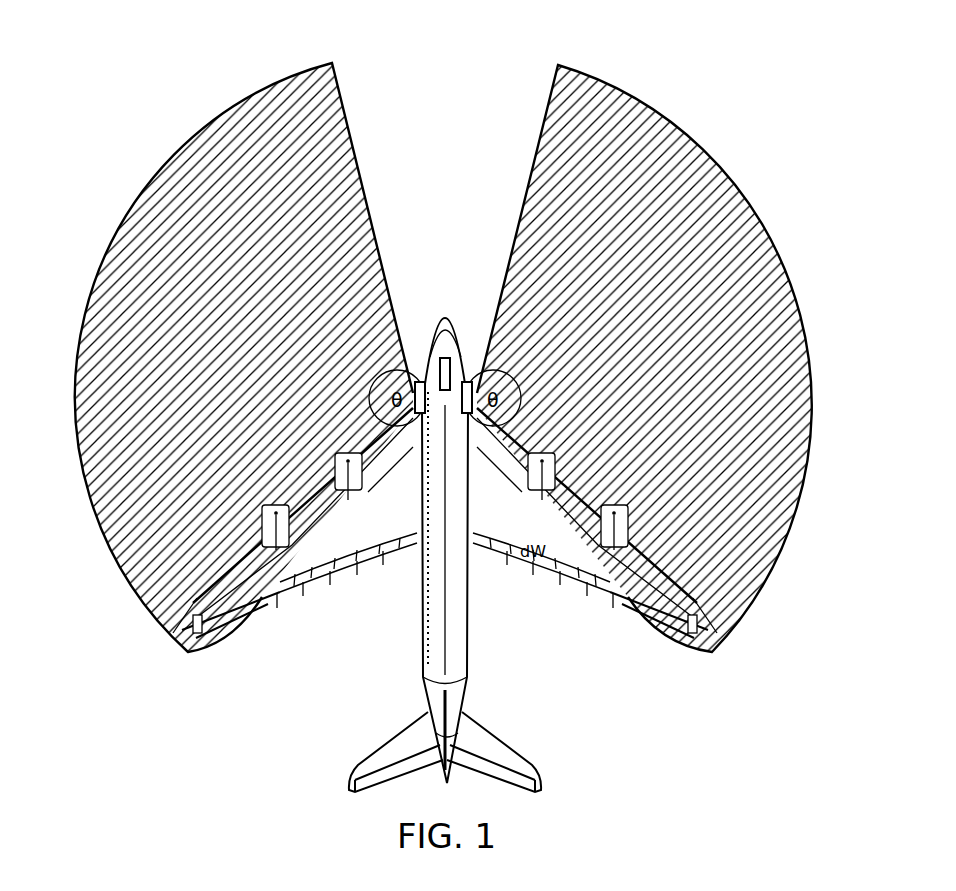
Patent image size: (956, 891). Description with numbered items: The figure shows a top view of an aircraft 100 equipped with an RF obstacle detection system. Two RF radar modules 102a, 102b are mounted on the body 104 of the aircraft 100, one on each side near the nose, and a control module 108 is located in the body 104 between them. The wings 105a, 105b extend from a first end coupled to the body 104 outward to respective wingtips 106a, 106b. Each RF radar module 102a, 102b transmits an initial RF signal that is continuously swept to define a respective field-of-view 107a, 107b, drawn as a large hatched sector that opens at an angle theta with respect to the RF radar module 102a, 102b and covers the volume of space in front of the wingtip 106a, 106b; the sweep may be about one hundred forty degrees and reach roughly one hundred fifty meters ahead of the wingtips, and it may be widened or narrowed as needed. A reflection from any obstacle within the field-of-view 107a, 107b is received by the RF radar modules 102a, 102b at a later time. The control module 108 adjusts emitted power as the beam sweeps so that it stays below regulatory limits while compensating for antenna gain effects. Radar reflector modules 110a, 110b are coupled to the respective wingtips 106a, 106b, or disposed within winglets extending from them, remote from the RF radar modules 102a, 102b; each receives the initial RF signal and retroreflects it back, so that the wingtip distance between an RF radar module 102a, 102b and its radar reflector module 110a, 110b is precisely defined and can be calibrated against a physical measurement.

The aircraft 100 is at (426, 639).
The RF radar module 102a is at (420, 382).
The RF radar module 102b is at (467, 382).
The body 104 is at (440, 597).
The wing 105a is at (385, 505).
The wing 105b is at (509, 505).
The wingtip 106a is at (183, 633).
The wingtip 106b is at (712, 622).
The field-of-view 107a is at (175, 200).
The field-of-view 107b is at (722, 205).
The control module 108 is at (446, 358).
The radar reflector module 110a is at (197, 640).
The radar reflector module 110b is at (707, 652).